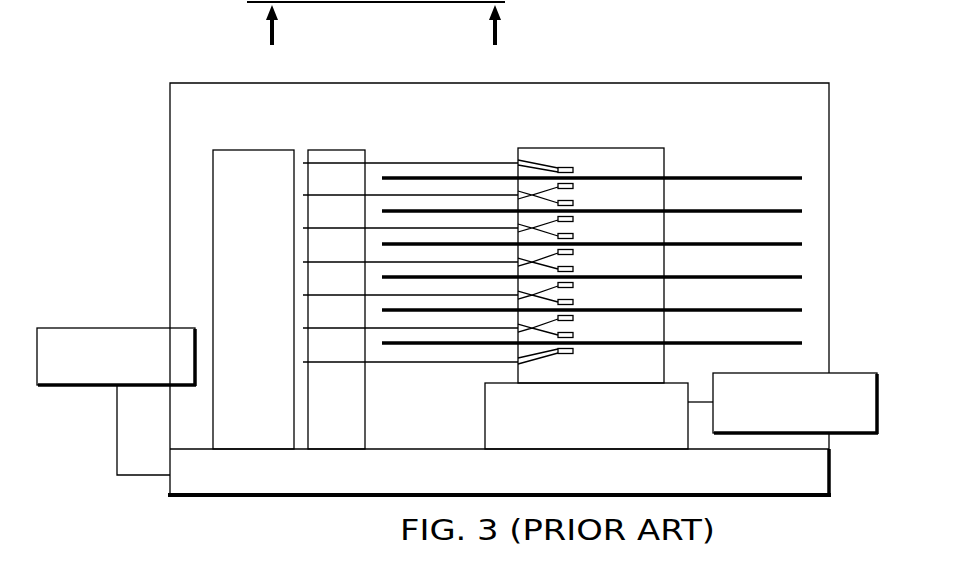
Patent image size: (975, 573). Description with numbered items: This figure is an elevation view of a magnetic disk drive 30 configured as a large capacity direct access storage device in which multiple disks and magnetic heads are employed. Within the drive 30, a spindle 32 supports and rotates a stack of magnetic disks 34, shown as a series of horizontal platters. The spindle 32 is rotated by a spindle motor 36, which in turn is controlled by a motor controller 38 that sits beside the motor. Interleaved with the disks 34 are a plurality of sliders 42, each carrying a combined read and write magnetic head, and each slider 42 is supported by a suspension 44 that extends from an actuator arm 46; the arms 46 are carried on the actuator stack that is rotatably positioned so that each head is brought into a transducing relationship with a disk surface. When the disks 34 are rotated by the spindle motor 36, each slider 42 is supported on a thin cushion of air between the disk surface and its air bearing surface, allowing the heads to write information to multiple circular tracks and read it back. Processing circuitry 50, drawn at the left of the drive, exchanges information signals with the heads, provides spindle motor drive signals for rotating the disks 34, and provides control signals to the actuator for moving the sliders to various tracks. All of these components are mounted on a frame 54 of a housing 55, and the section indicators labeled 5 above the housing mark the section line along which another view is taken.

The section line 5- 5 is at (376, 38).
The magnetic disk drive 30 is at (722, 139).
The spindle 32 is at (641, 148).
The magnetic disk 34 is at (777, 179).
The spindle motor 36 is at (607, 428).
The motor controller 38 is at (862, 434).
The slider 42 is at (578, 196).
The suspension 44 is at (545, 200).
The actuator arm 46 is at (470, 195).
The processing circuitry 50 is at (96, 327).
The frame 54 is at (290, 499).
The housing 55 is at (675, 82).